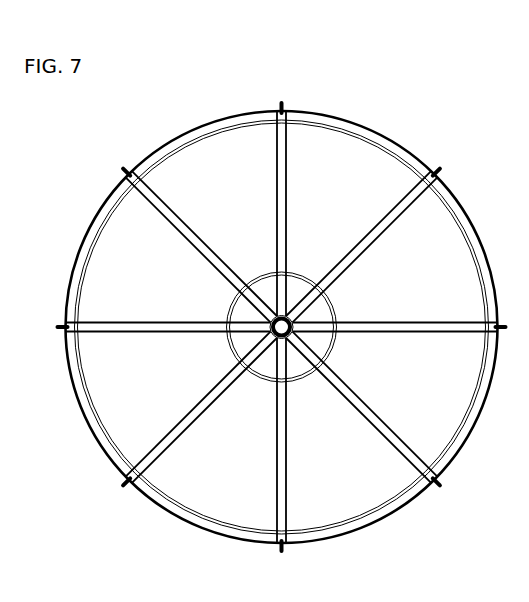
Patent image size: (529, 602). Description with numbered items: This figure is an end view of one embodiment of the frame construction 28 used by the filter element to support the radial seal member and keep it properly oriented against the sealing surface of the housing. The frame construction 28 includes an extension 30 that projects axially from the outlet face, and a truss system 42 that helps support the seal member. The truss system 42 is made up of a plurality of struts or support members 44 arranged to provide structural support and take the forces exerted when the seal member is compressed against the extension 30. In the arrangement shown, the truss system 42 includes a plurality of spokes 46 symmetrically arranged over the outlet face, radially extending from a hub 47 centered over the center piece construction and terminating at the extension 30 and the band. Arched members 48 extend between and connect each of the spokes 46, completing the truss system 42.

The frame construction 28 is at (366, 105).
The extension 30 is at (391, 135).
The truss system 42 is at (430, 231).
The struts or support members 44 is at (176, 217).
The spokes 46 is at (286, 172).
The hub 47 is at (287, 313).
The arched members 48 is at (257, 273).